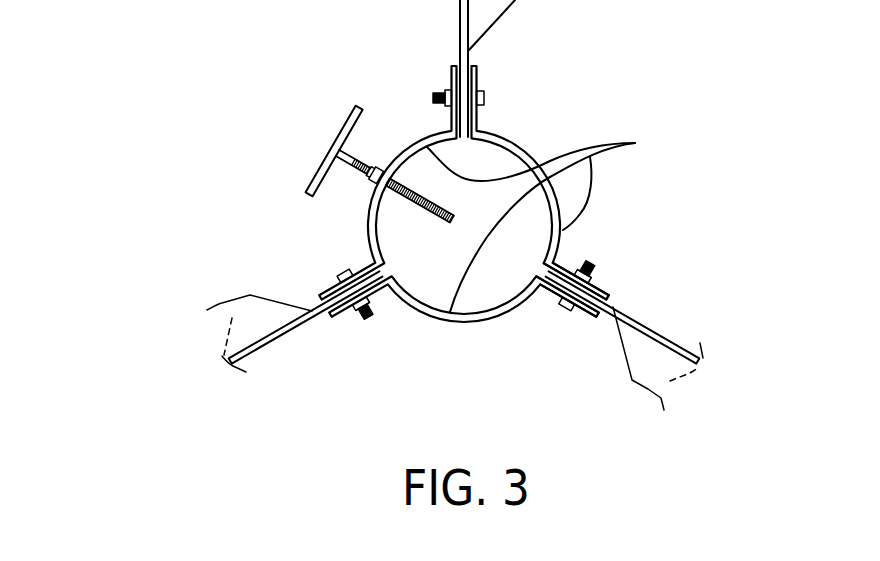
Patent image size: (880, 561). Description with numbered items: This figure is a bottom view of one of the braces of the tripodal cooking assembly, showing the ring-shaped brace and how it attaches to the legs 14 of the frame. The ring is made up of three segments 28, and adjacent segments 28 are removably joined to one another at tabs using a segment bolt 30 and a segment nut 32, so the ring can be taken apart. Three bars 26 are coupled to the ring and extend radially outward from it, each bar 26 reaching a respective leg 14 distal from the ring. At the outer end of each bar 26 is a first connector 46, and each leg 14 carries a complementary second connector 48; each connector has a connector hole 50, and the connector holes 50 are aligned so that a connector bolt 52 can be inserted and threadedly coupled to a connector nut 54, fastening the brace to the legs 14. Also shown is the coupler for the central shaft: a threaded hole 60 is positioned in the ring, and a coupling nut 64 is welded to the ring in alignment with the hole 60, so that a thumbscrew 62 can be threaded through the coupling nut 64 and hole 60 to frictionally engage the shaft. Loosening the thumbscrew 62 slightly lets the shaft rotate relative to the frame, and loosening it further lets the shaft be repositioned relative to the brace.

The leg 14 is at (657, 330).
The bar 26 is at (620, 304).
The segment 28 is at (633, 143).
The segment bolt 30 is at (485, 100).
The segment nut 32 is at (447, 93).
The first connector 46 is at (557, 282).
The second connector 48 is at (573, 306).
The connector hole 50 is at (350, 303).
The connector bolt 52 is at (343, 280).
The connector nut 54 is at (368, 312).
The hole 60 is at (391, 196).
The thumbscrew 62 is at (335, 148).
The coupling nut 64 is at (360, 171).